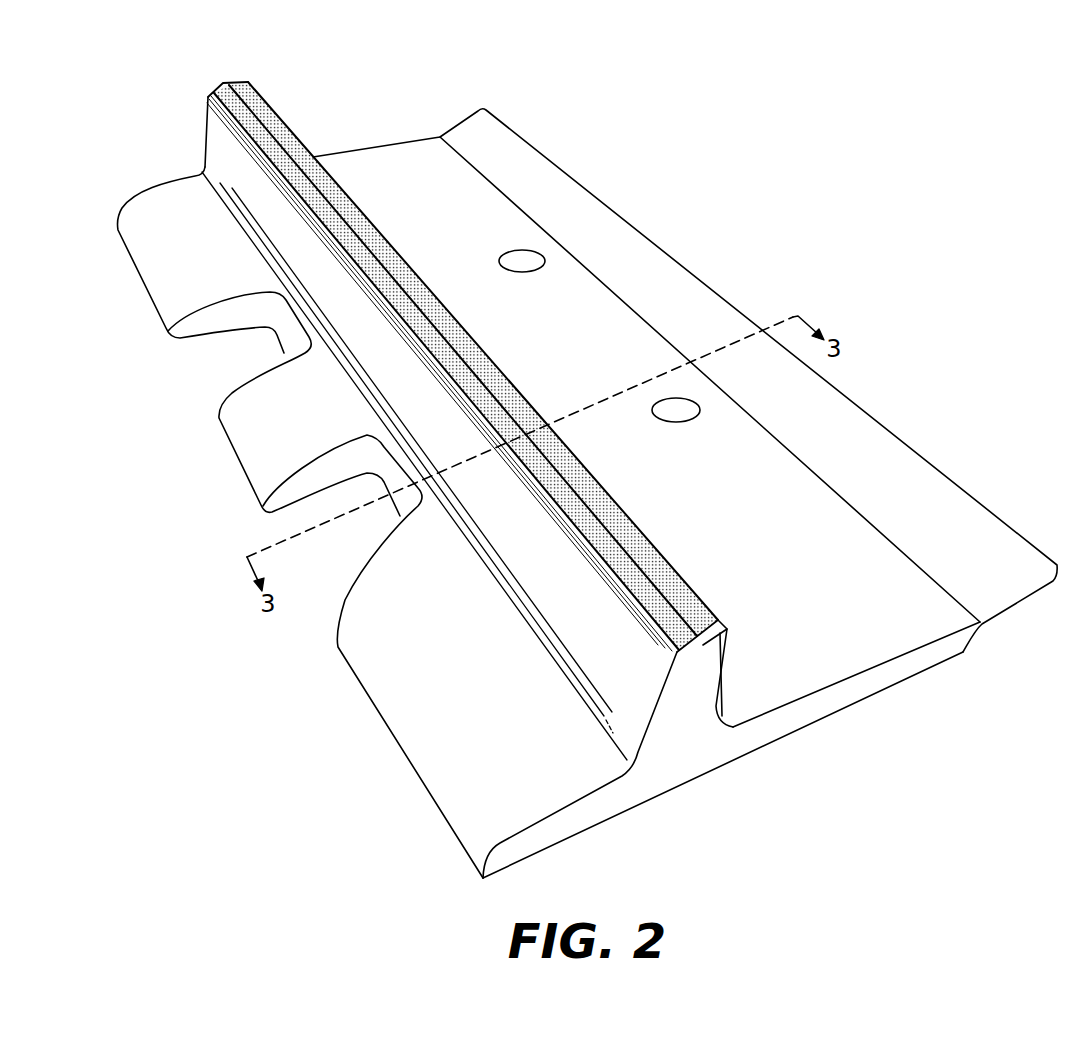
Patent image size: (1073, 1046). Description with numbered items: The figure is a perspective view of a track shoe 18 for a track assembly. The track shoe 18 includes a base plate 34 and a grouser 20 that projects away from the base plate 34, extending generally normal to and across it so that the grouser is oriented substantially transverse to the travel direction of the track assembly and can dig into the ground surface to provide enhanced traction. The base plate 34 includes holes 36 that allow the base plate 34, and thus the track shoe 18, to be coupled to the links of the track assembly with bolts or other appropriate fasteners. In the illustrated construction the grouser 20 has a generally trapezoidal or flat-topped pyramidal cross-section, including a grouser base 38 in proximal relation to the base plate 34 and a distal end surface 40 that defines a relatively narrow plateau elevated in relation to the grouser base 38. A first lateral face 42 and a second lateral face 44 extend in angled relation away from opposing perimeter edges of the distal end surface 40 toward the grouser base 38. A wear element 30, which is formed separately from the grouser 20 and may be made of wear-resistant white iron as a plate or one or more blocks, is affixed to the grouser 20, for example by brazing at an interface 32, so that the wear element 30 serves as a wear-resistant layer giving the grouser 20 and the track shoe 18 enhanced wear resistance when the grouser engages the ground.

The track shoe 18 is at (881, 357).
The grouser 20 is at (728, 665).
The wear element 30 is at (252, 96).
The interface 32 is at (715, 683).
The base plate 34 is at (952, 643).
The holes 36 is at (545, 262).
The grouser base 38 is at (662, 727).
The distal end surface 40 is at (650, 627).
The first lateral face 42 is at (650, 693).
The second lateral face 44 is at (730, 640).